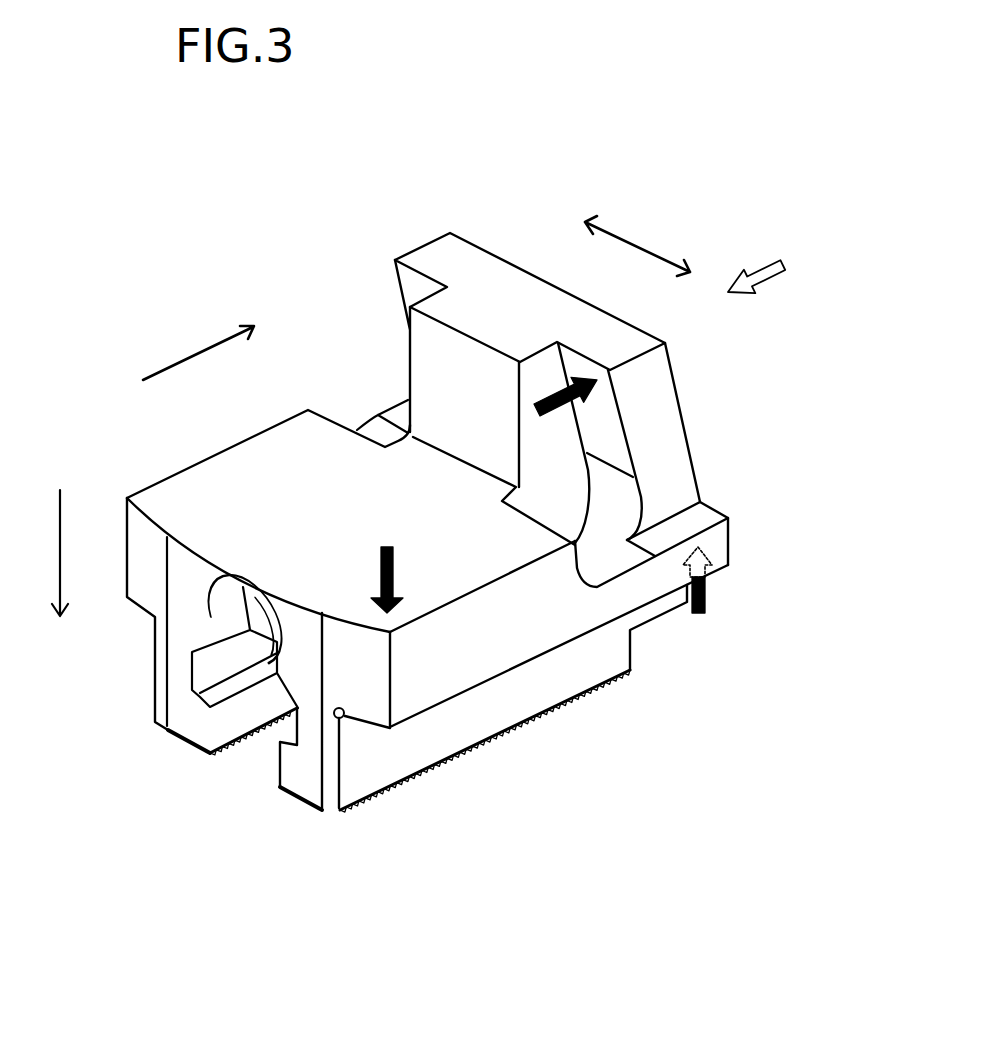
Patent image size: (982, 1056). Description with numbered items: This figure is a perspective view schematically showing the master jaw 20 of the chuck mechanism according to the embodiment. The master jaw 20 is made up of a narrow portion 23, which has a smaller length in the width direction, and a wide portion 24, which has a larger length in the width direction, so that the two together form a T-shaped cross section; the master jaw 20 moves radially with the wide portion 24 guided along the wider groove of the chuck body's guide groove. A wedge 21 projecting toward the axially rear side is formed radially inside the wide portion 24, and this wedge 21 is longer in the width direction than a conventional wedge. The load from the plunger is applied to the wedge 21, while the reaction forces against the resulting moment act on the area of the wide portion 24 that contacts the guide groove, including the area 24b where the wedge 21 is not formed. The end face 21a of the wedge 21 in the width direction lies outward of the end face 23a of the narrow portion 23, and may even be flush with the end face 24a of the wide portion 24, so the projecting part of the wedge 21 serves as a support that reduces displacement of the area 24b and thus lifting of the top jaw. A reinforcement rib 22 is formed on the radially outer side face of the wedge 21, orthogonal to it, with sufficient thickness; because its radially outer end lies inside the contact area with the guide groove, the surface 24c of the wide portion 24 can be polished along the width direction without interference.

The master jaw 20 is at (332, 240).
The wedge 21 is at (645, 397).
The end face of the wedge in the width direction 21a is at (655, 457).
The reinforcement rib 22 is at (567, 427).
The narrow portion 23 is at (463, 718).
The end face of the narrow portion in the width direction 23a is at (384, 760).
The wide portion 24 is at (517, 633).
The end face of the wide portion in the width direction 24a is at (620, 590).
The area where the wedge is not formed in the wide portion 24b is at (703, 518).
The surface of the wide portion 24c is at (288, 452).